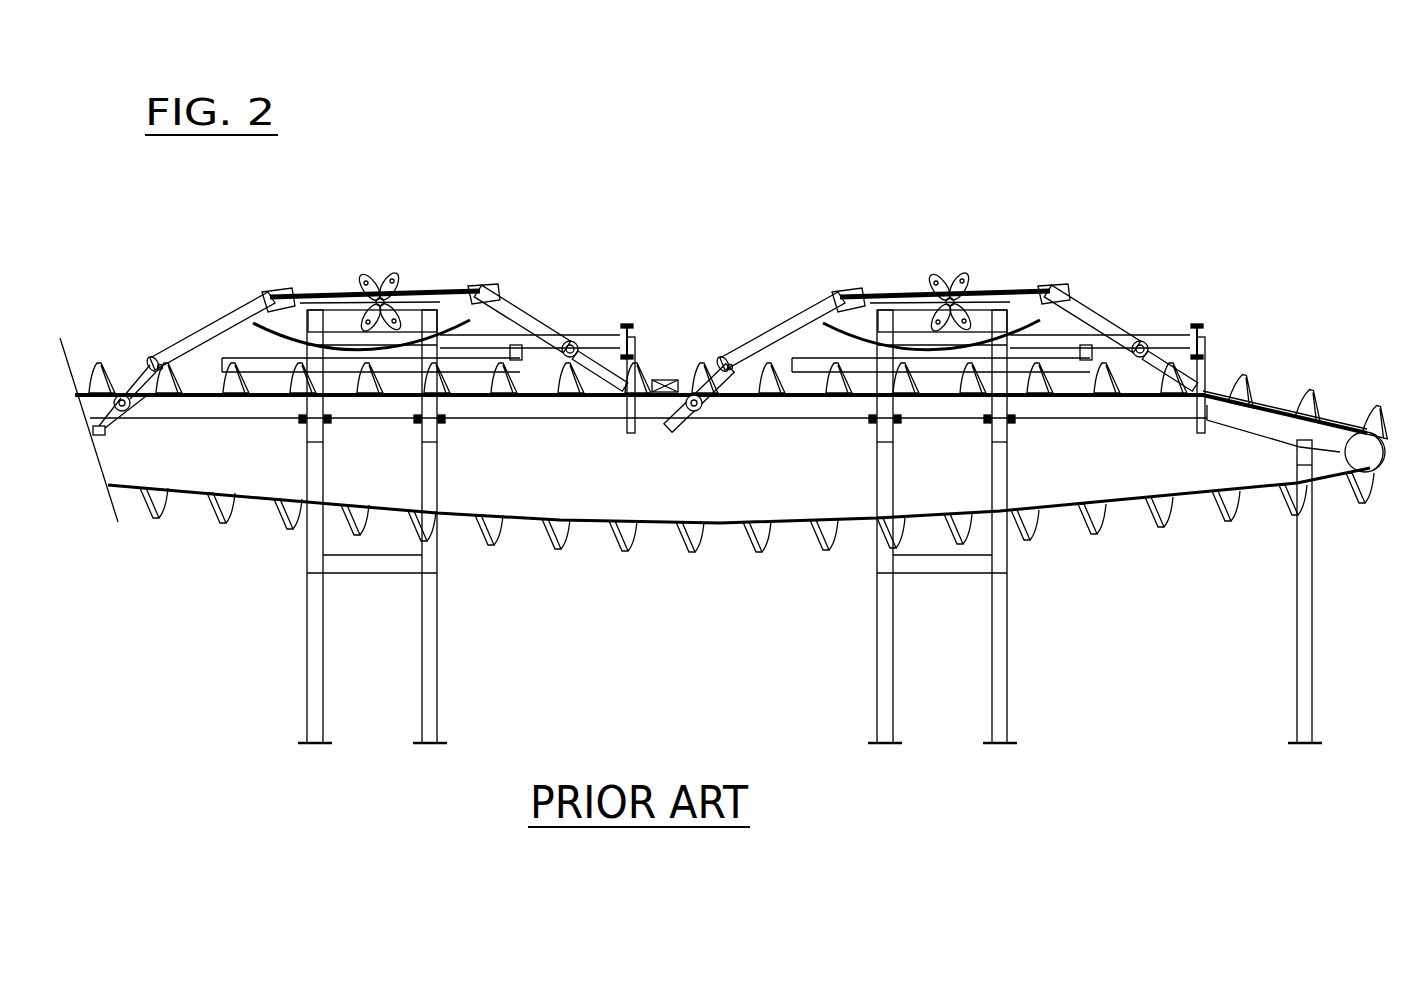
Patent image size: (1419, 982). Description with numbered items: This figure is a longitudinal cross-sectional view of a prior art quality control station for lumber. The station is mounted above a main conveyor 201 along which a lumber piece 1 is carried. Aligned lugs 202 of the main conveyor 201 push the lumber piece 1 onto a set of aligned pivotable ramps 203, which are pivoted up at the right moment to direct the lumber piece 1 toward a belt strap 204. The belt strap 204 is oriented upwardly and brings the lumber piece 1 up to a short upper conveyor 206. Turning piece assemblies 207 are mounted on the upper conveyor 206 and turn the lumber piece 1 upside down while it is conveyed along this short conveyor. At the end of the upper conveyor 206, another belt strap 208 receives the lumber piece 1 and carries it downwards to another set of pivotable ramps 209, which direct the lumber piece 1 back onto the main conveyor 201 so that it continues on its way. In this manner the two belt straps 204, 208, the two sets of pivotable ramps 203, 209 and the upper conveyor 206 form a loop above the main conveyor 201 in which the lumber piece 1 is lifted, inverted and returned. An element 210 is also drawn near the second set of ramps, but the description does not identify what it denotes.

The lumber piece 1 is at (662, 380).
The main conveyor 201 is at (828, 425).
The aligned lugs 202 is at (1306, 372).
The pivotable ramps 203 is at (713, 400).
The belt strap 204 is at (787, 330).
The upper conveyor 206 is at (896, 282).
The turning piece assemblies 207 is at (960, 272).
The belt strap 208 is at (1088, 309).
The pivotable ramps 209 is at (1172, 347).
The stop bar 210 is at (1206, 326).